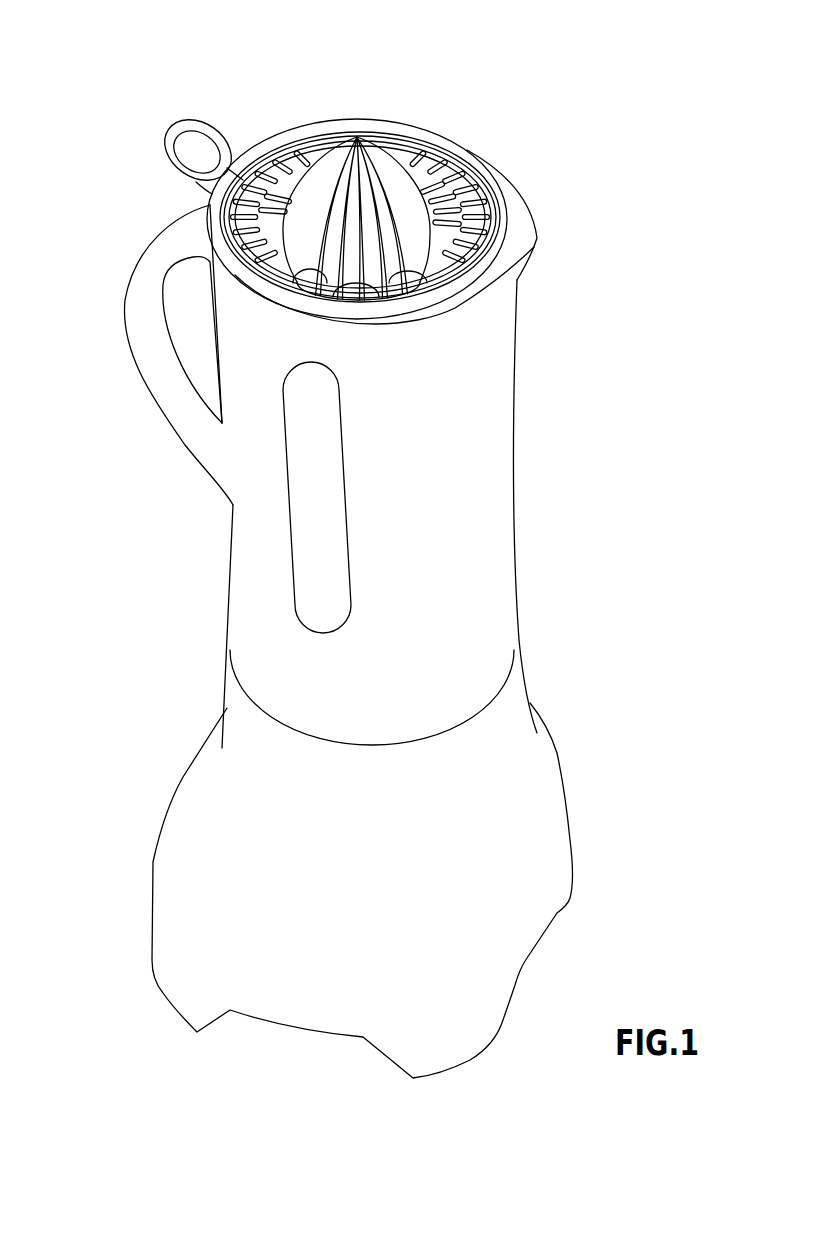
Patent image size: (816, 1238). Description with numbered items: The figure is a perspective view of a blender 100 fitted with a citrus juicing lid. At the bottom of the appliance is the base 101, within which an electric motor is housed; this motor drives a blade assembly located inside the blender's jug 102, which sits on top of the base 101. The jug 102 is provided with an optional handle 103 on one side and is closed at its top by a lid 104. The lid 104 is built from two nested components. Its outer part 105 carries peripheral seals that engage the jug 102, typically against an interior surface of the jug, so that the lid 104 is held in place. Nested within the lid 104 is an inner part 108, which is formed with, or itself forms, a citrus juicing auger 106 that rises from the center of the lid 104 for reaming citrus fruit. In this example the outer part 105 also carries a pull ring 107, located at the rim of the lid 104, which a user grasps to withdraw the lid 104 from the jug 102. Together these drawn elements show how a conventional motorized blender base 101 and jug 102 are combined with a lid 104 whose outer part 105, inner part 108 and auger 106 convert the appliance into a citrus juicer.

The blender 100 is at (612, 405).
The base 101 is at (520, 777).
The jug 102 is at (485, 515).
The handle 103 is at (177, 417).
The lid 104 is at (522, 200).
The outer part 105 is at (491, 163).
The citrus juicing auger 106 is at (403, 170).
The pull ring 107 is at (212, 130).
The inner part 108 is at (313, 162).